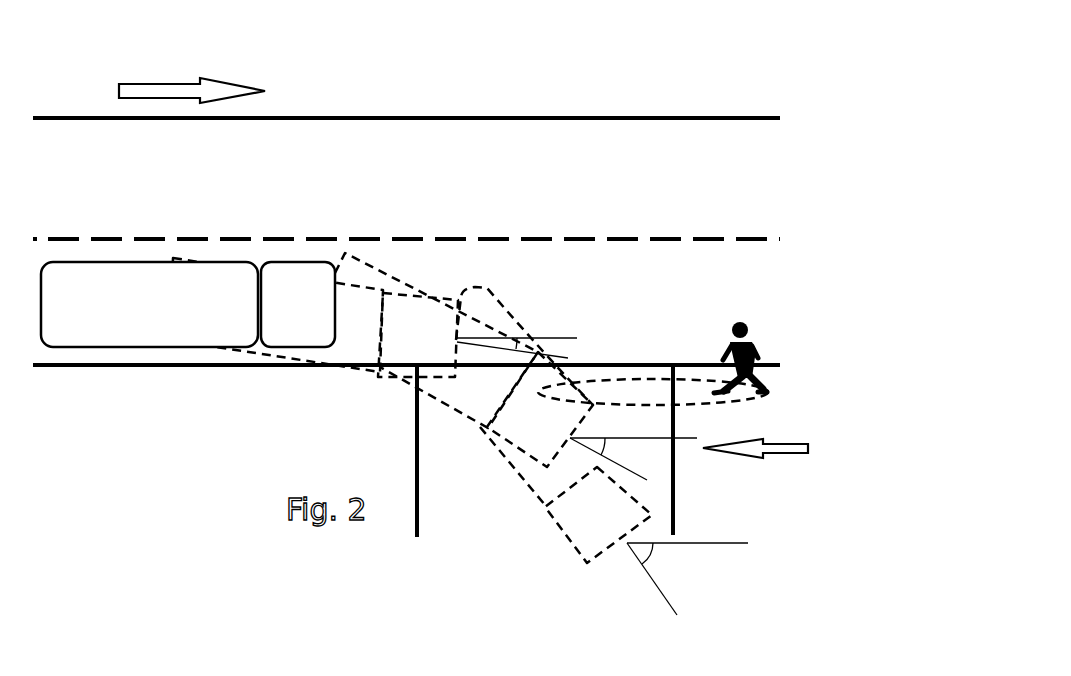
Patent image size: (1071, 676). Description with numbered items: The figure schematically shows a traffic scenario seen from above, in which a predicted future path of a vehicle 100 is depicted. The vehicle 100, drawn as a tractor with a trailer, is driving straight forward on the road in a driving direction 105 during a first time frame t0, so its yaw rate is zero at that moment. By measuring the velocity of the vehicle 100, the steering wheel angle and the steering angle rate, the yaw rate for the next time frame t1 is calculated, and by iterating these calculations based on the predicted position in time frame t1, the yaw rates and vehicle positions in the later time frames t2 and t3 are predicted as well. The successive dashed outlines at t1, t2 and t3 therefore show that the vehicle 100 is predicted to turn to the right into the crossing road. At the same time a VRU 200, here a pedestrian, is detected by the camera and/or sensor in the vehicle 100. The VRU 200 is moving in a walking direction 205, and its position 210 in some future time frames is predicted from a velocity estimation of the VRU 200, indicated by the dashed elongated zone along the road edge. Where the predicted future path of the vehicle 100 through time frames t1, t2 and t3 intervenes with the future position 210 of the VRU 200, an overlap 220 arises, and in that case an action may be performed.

The vehicle 100 is at (168, 316).
The driving direction 105 is at (192, 75).
The VRU 200 is at (742, 322).
The walking direction 205 is at (755, 435).
The position of the VRU 210 is at (632, 388).
The overlap 220 is at (567, 385).
The first time frame t0 is at (297, 262).
The time frame t1 is at (412, 293).
The time frame t2 is at (478, 425).
The time frame t3 is at (565, 542).